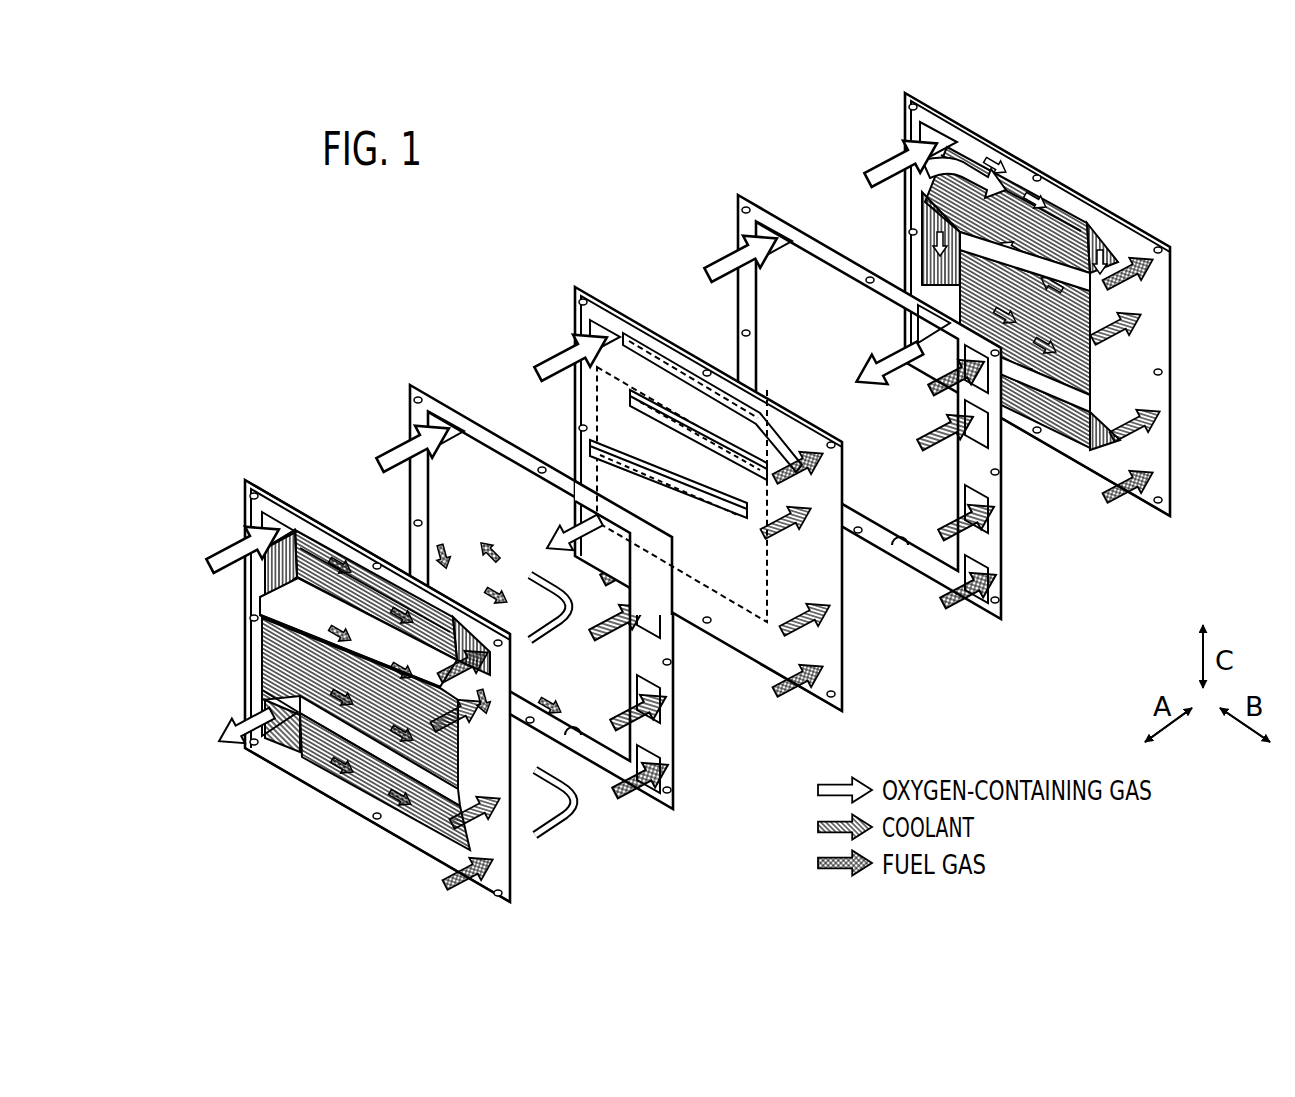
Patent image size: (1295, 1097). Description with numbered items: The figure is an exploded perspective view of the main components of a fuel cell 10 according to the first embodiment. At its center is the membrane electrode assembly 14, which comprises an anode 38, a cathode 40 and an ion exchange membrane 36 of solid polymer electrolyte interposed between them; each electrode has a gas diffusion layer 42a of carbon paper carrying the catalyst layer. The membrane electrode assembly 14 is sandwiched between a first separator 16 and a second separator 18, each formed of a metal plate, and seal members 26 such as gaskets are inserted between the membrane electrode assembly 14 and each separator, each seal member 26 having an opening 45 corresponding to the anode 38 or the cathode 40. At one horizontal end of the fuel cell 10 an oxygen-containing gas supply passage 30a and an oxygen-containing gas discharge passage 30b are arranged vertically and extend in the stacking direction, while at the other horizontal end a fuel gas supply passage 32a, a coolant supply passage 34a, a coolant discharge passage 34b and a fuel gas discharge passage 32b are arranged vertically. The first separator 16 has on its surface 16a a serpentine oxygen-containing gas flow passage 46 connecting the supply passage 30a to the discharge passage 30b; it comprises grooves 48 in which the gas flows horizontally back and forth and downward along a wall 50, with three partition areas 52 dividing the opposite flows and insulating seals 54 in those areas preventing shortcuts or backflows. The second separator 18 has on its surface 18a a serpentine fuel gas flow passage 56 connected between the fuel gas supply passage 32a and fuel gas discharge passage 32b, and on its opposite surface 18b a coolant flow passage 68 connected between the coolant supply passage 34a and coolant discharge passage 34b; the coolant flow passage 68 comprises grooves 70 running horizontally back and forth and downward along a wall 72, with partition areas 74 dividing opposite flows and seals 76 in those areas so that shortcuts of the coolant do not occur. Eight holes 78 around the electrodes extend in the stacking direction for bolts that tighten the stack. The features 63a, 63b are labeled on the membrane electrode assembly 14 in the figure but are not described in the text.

The fuel cell 10 is at (398, 283).
The membrane electrode assembly 14 is at (573, 283).
The first separator 16 is at (902, 91).
The surface of first separator 16a is at (1097, 472).
The second separator 18 is at (242, 477).
The surface of second separator 18a is at (290, 510).
The surface of second separator 18b is at (418, 845).
The seal member 26 is at (735, 191).
The oxygen-containing gas supply passage 30a is at (912, 133).
The oxygen-containing gas discharge passage 30b is at (912, 333).
The fuel gas supply passage 32a is at (1150, 268).
The fuel gas discharge passage 32b is at (1160, 481).
The coolant supply passage 34a is at (1160, 338).
The coolant discharge passage 34b is at (1160, 437).
The ion exchange membrane 36 is at (843, 620).
The anode 38 is at (590, 375).
The cathode 40 is at (775, 393).
The gas diffusion layer 42a is at (585, 440).
The opening 45 is at (575, 742).
The oxygen-containing gas flow passage 46 is at (930, 272).
The grooves 48 is at (1012, 185).
The wall 50 is at (1072, 215).
The partition areas 52 is at (1040, 240).
The insulating seals 54 is at (945, 208).
The fuel gas flow passage 56 is at (442, 610).
The slot 63a is at (830, 700).
The slot 63b is at (640, 468).
The coolant flow passage 68 is at (265, 592).
The grooves 70 is at (372, 790).
The wall 72 is at (330, 545).
The partition areas 74 is at (360, 575).
The seals 76 is at (265, 640).
The holes 78 is at (496, 896).